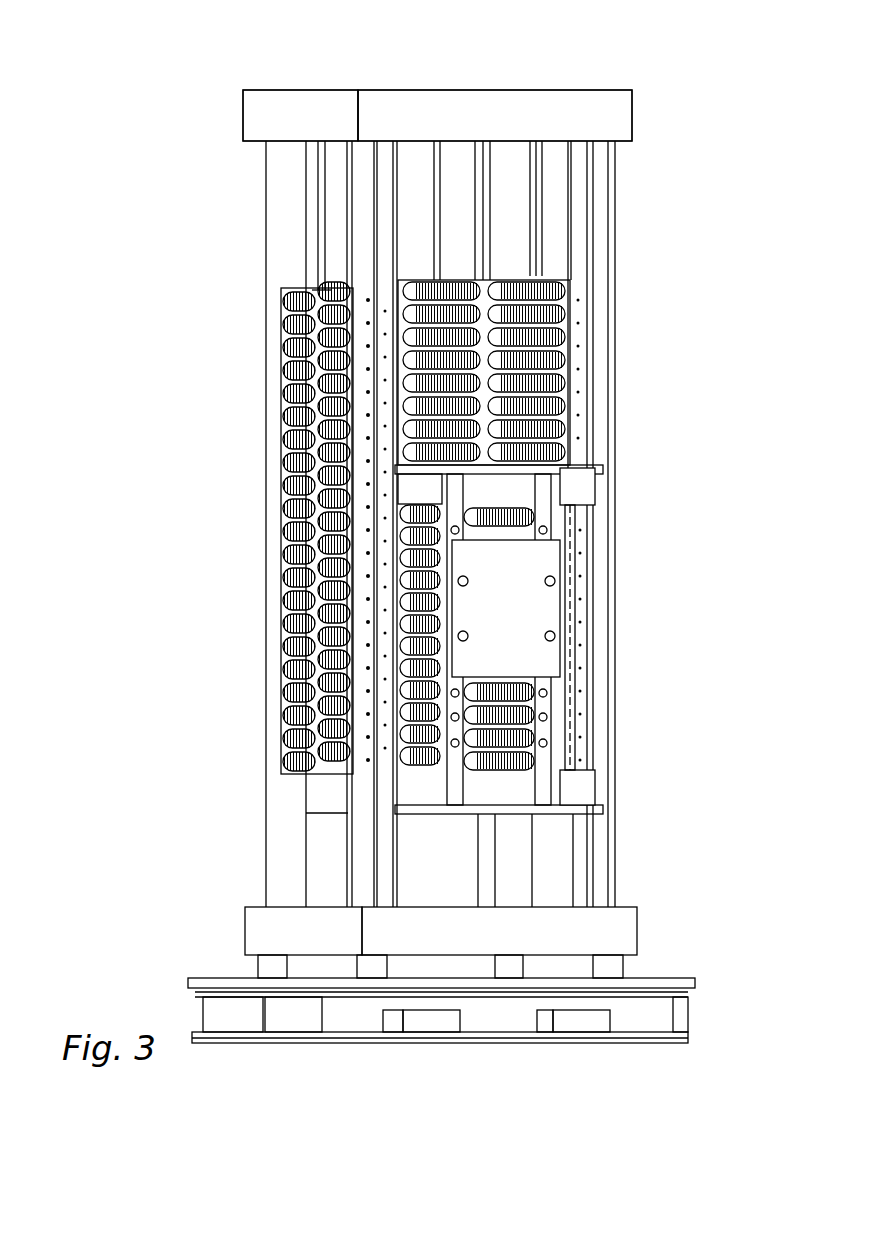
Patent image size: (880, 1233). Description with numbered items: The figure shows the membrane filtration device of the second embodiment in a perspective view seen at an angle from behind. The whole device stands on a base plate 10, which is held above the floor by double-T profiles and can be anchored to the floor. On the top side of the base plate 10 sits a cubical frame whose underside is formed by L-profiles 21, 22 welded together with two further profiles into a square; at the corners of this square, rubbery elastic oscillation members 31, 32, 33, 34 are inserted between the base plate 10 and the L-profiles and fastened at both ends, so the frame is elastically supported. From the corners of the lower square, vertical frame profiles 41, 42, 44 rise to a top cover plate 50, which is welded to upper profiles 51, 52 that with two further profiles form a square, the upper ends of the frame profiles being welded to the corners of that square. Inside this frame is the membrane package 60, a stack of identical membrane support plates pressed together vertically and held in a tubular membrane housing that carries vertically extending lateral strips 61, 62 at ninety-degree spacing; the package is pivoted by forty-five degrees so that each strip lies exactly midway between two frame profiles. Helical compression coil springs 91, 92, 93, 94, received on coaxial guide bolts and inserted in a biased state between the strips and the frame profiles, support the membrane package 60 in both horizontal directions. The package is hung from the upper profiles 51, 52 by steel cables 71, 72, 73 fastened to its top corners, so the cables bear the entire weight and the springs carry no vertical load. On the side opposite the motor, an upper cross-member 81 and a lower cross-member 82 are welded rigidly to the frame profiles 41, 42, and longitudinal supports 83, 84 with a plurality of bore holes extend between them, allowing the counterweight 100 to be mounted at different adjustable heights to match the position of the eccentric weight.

The base plate 10 is at (218, 990).
The L-profile 21 is at (275, 930).
The L-profile 22 is at (583, 925).
The oscillation member 31 is at (270, 972).
The oscillation member 32 is at (370, 970).
The oscillation member 33 is at (608, 966).
The oscillation member 34 is at (507, 968).
The frame profile 41 is at (362, 860).
The frame profile 42 is at (603, 862).
The frame profile 44 is at (285, 782).
The top cover plate 50 is at (382, 92).
The upper profile 51 is at (290, 120).
The upper profile 52 is at (553, 125).
The membrane package 60 is at (448, 272).
The lateral strip 61 is at (292, 318).
The lateral strip 62 is at (480, 285).
The steel cable 71 is at (322, 215).
The steel cable 72 is at (458, 152).
The steel cable 73 is at (537, 235).
The upper cross-member 81 is at (580, 487).
The lower cross-member 82 is at (580, 787).
The longitudinal support 83 is at (568, 508).
The longitudinal support 84 is at (487, 732).
The coil spring 91 is at (292, 402).
The coil spring 92 is at (292, 462).
The coil spring 93 is at (520, 343).
The coil spring 94 is at (520, 385).
The counterweight 100 is at (528, 610).